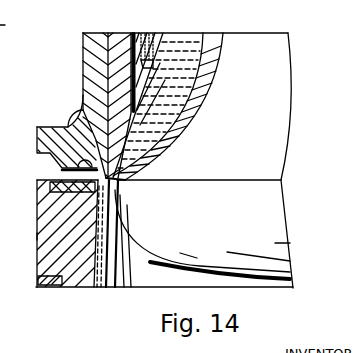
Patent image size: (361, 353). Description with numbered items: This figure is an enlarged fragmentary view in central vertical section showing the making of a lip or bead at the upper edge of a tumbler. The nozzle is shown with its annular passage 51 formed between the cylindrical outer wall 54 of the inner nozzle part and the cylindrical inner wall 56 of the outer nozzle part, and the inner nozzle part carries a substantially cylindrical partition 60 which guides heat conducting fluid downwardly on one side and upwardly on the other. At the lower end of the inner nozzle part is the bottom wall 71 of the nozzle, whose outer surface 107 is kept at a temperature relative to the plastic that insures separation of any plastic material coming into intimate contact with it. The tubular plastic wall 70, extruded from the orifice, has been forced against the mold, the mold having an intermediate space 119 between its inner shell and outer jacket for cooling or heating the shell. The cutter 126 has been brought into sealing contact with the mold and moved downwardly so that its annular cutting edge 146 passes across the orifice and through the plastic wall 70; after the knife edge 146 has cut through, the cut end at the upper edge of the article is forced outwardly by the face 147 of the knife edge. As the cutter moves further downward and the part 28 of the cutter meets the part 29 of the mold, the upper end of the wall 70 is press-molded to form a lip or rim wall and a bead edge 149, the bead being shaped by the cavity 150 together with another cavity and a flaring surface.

The intermediate space 119 is at (16, 26).
The cutter 126 is at (80, 68).
The face of the knife edge 147 is at (83, 101).
The cylindrical partition 60 is at (146, 33).
The cylindrical inner wall 56 is at (172, 33).
The cylindrical outer wall 54 is at (208, 33).
The annular passage 51 is at (37, 128).
The gasket 28 is at (43, 172).
The annular cutting edge 146 is at (118, 188).
The housing block 29 is at (37, 207).
The cavity 150 is at (37, 235).
The bead edge 149 is at (31, 298).
The bottom wall of the nozzle 71 is at (291, 254).
The outer surface 107 is at (175, 262).
The tubular plastic wall 70 is at (100, 285).